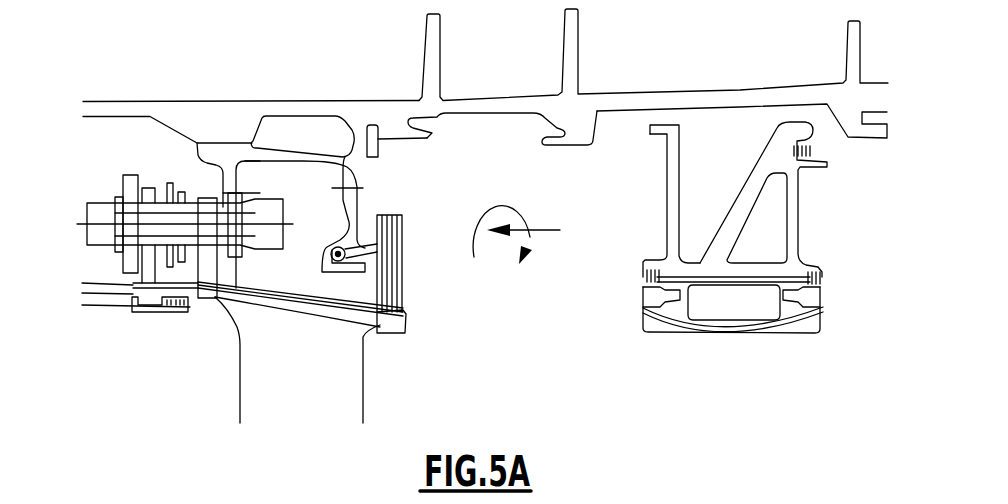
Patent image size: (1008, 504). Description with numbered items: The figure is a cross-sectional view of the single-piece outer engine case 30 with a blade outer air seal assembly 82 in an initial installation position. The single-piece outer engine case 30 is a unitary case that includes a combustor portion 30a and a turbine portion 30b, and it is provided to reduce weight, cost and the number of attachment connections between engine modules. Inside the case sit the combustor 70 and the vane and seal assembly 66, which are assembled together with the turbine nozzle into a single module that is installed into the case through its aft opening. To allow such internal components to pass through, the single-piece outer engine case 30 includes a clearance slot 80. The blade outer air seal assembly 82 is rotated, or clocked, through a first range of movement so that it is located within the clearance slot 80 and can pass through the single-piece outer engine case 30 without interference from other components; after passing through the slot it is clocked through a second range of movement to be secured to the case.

The single-piece outer engine case 30 is at (747, 83).
The combustor portion 30a is at (102, 101).
The turbine portion 30b is at (525, 100).
The vane and seal assembly 66 is at (349, 342).
The combustor 70 is at (132, 307).
The clearance slot 80 is at (594, 131).
The blade outer air seal assembly 82 is at (815, 250).